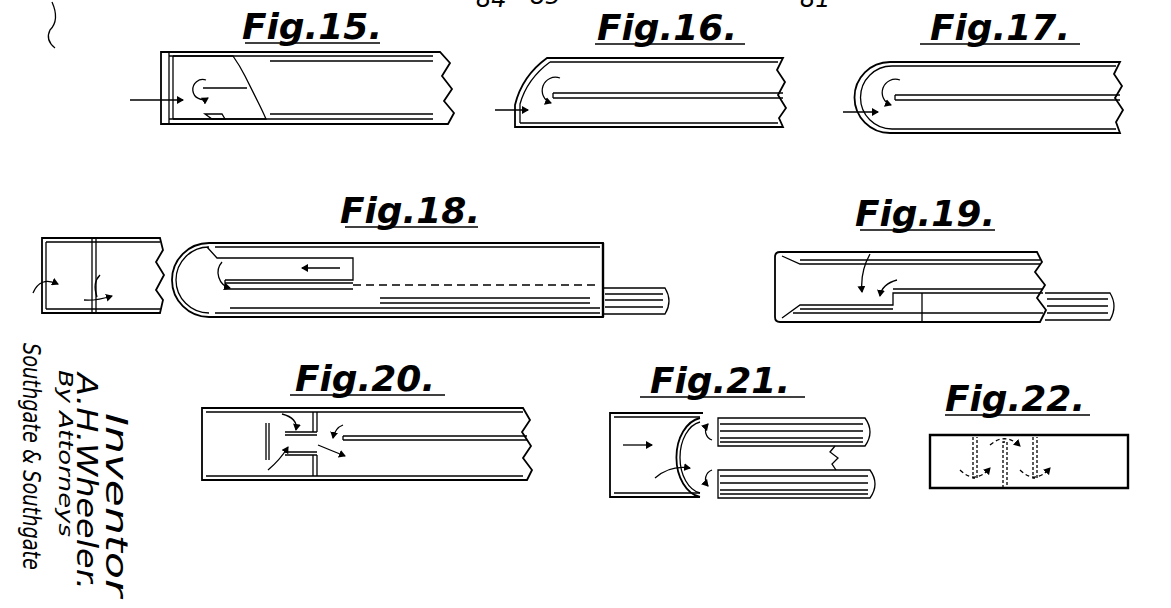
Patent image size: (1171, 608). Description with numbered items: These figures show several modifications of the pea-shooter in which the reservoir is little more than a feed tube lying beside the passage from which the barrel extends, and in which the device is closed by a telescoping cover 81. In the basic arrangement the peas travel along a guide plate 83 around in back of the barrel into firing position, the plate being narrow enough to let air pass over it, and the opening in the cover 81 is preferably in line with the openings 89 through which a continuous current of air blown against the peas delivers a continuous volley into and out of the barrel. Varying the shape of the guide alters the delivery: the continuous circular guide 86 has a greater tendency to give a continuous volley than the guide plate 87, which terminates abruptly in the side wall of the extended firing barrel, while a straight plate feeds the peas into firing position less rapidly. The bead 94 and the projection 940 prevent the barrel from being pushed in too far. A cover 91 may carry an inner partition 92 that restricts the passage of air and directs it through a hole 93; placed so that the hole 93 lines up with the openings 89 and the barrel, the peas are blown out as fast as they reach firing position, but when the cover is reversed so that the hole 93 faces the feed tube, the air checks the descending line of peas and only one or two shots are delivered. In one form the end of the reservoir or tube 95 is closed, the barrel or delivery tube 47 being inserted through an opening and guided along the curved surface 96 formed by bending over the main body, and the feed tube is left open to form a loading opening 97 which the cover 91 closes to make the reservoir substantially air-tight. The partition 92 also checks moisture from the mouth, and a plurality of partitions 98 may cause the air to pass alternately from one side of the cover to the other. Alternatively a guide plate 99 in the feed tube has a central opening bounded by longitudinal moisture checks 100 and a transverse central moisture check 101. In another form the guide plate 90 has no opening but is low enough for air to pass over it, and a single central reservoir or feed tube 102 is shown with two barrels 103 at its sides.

In FIG. 15, the telescoping cover 81 is at (312, 128).
In FIG. 15, the guide plate 83 is at (161, 68).
In FIG. 15, the bead 94 is at (246, 72).
In FIG. 15, the openings 89 is at (181, 125).
In FIG. 16, the openings 89 is at (517, 112).
In FIG. 17, the openings 89 is at (868, 115).
In FIG. 16, the guide plate 87 is at (540, 76).
In FIG. 16, the projection 940 is at (556, 98).
In FIG. 17, the projection 940 is at (898, 100).
In FIG. 17, the continuous circular guide 86 is at (867, 86).
In FIG. 18, the cover 91 is at (93, 240).
In FIG. 18, the inner partition 92 is at (100, 260).
In FIG. 19, the inner partition 92 is at (859, 289).
In FIG. 18, the hole 93 is at (99, 285).
In FIG. 18, the reservoir or tube 95 is at (607, 258).
In FIG. 18, the loading opening 97 is at (248, 266).
In FIG. 18, the curved surface 96 is at (233, 300).
In FIG. 18, the rod 47 is at (640, 318).
In FIG. 19, the rod 47 is at (1070, 322).
In FIG. 20, the guide plate 99 is at (318, 470).
In FIG. 20, the longitudinal moisture checks 100 is at (295, 428).
In FIG. 20, the transverse central moisture check 101 is at (262, 447).
In FIG. 21, the single central reservoir or feed tube 102 is at (790, 463).
In FIG. 21, the guide plate 90 is at (686, 483).
In FIG. 21, the barrels 103 is at (850, 425).
In FIG. 22, the partitions 98 is at (970, 455).